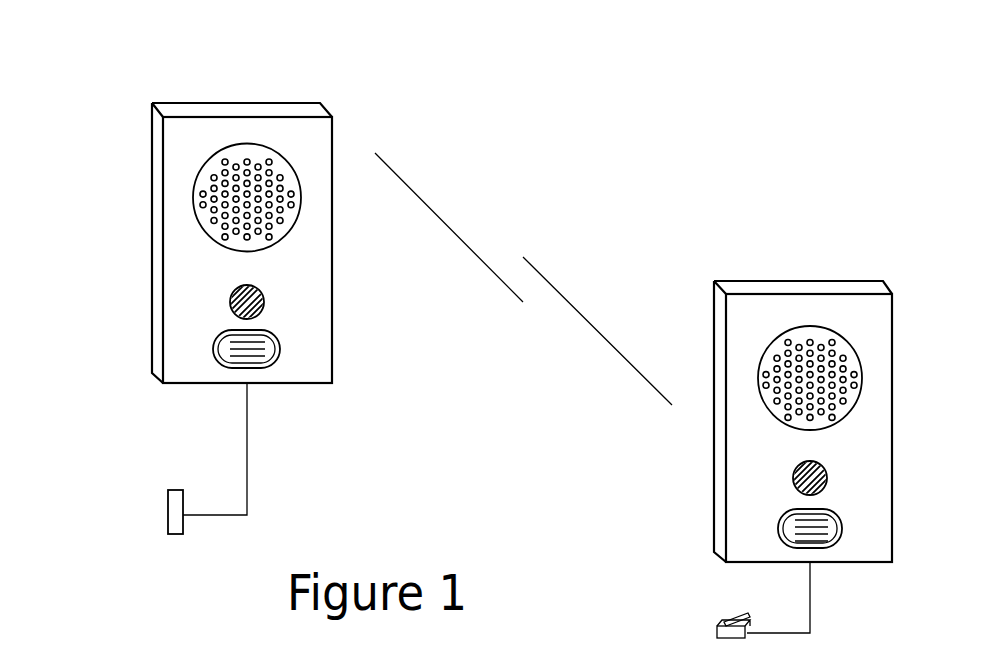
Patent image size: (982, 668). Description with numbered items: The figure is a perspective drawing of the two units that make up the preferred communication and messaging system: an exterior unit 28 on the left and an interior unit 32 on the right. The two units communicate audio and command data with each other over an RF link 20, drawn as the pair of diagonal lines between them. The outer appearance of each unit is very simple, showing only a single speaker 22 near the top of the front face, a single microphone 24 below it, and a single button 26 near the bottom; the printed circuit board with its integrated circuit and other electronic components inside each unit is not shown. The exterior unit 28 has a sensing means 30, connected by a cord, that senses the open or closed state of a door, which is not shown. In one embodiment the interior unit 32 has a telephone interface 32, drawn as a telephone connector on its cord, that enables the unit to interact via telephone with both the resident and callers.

The RF link 20 is at (400, 174).
The speaker 22 is at (195, 197).
The microphone 24 is at (230, 302).
The button 26 is at (213, 348).
The exterior unit 28 is at (120, 90).
The sensing means 30 is at (168, 497).
The interior unit 32 is at (838, 245).